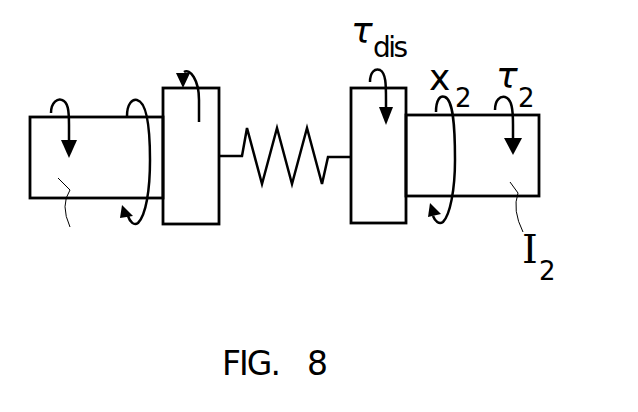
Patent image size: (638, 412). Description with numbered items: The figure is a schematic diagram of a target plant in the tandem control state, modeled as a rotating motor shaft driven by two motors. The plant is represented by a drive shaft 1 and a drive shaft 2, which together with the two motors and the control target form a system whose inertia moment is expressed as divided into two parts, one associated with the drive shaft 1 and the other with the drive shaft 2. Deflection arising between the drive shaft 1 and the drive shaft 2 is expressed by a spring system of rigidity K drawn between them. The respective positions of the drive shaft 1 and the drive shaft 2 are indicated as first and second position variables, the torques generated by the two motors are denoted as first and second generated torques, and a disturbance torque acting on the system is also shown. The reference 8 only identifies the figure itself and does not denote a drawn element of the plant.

The drive shaft 1 is at (49, 112).
The drive shaft 2 is at (186, 100).
The torsional spring K 8 is at (284, 185).